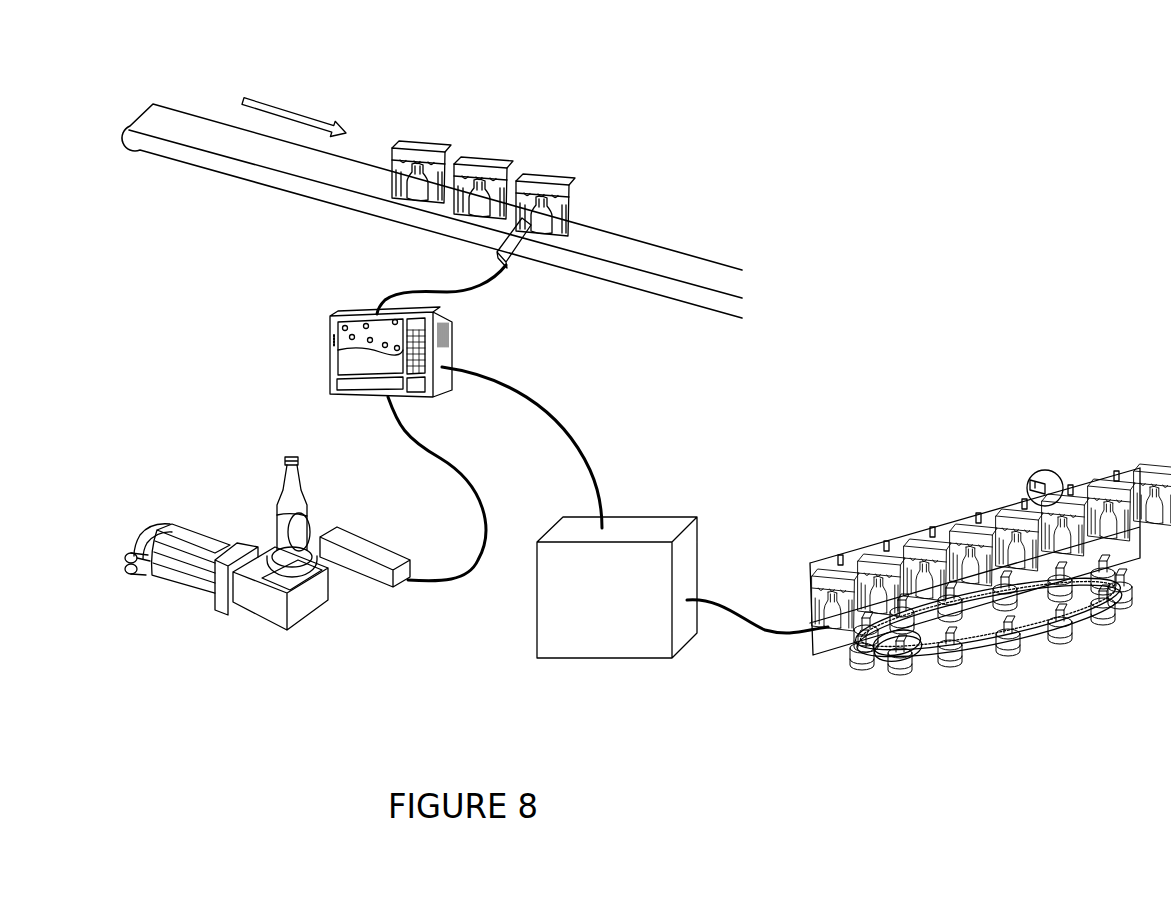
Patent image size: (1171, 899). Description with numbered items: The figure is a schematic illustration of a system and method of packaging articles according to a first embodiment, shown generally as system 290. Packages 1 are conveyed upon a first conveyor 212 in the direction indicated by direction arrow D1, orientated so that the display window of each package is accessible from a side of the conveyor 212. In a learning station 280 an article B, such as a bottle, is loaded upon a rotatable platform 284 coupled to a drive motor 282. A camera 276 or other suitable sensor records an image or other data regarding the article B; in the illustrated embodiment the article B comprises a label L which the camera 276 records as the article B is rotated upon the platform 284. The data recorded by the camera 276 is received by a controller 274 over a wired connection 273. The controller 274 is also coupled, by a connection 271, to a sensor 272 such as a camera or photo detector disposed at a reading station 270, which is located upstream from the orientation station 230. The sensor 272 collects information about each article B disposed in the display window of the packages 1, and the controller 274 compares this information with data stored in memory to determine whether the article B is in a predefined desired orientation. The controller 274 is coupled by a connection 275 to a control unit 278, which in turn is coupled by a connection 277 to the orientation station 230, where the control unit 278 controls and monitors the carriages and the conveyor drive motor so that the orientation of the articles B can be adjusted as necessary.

The package 1 is at (413, 146).
The first conveyor 212 is at (200, 140).
The direction arrow D1 is at (294, 113).
The orientation station 230 is at (1042, 690).
The reading station 270 is at (516, 124).
The signal line 271 is at (480, 282).
The sensor 272 is at (519, 262).
The signal line 273 is at (437, 452).
The controller 274 is at (330, 340).
The signal line 275 is at (545, 402).
The camera 276 is at (363, 547).
The signal line 277 is at (772, 635).
The control unit 278 is at (627, 616).
The learning station 280 is at (182, 648).
The drive motor 282 is at (130, 568).
The rotatable platform 284 is at (263, 602).
The labeling system 290 is at (873, 247).
The article B is at (283, 487).
The label L is at (277, 535).